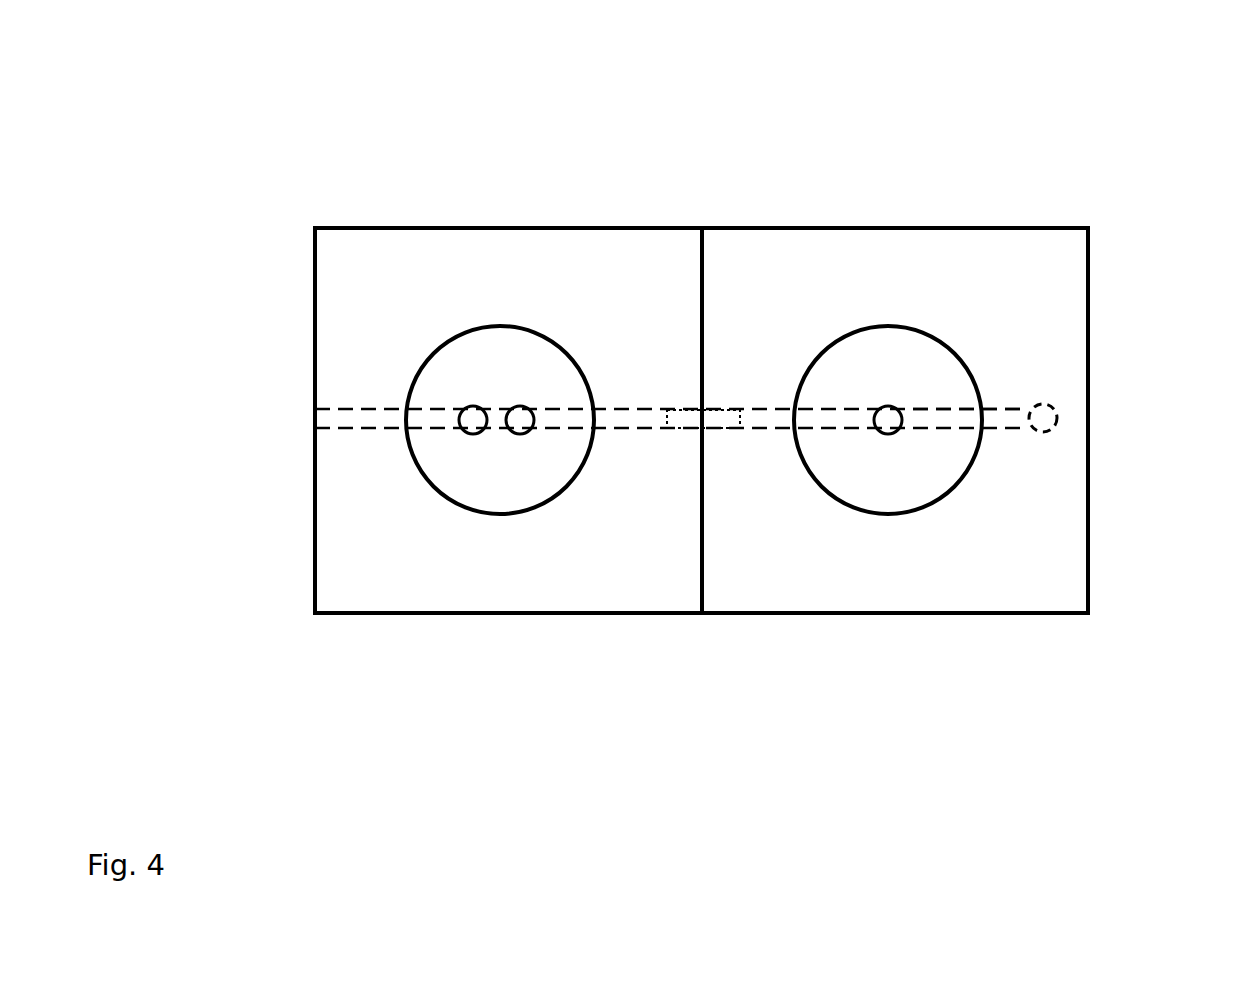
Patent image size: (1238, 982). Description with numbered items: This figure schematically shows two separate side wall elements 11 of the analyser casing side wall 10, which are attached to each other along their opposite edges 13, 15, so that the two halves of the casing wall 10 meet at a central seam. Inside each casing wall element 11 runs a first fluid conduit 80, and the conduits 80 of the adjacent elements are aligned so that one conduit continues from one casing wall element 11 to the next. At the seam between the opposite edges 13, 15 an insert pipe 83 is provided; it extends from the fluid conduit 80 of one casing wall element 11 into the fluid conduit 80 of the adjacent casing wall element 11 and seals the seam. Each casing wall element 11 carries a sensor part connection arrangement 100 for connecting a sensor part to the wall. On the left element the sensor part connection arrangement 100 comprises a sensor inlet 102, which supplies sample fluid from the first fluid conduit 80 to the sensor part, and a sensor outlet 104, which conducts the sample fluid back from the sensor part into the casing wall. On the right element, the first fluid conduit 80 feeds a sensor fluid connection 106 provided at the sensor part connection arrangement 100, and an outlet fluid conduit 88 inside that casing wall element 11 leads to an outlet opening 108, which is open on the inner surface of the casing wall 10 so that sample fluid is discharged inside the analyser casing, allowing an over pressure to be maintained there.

The side wall 10 is at (315, 613).
The separate side wall element 11 is at (483, 260).
The edge 13 is at (703, 264).
The edge 15 is at (702, 282).
The first fluid conduit 80 is at (372, 407).
The insert pipe 83 is at (723, 408).
The outlet fluid conduit 88 is at (1002, 407).
The sensor part connection arrangement 100 is at (518, 325).
The sensor inlet 102 is at (473, 434).
The sensor outlet 104 is at (520, 434).
The sensor fluid connection 106 is at (890, 435).
The outlet opening 108 is at (1060, 413).